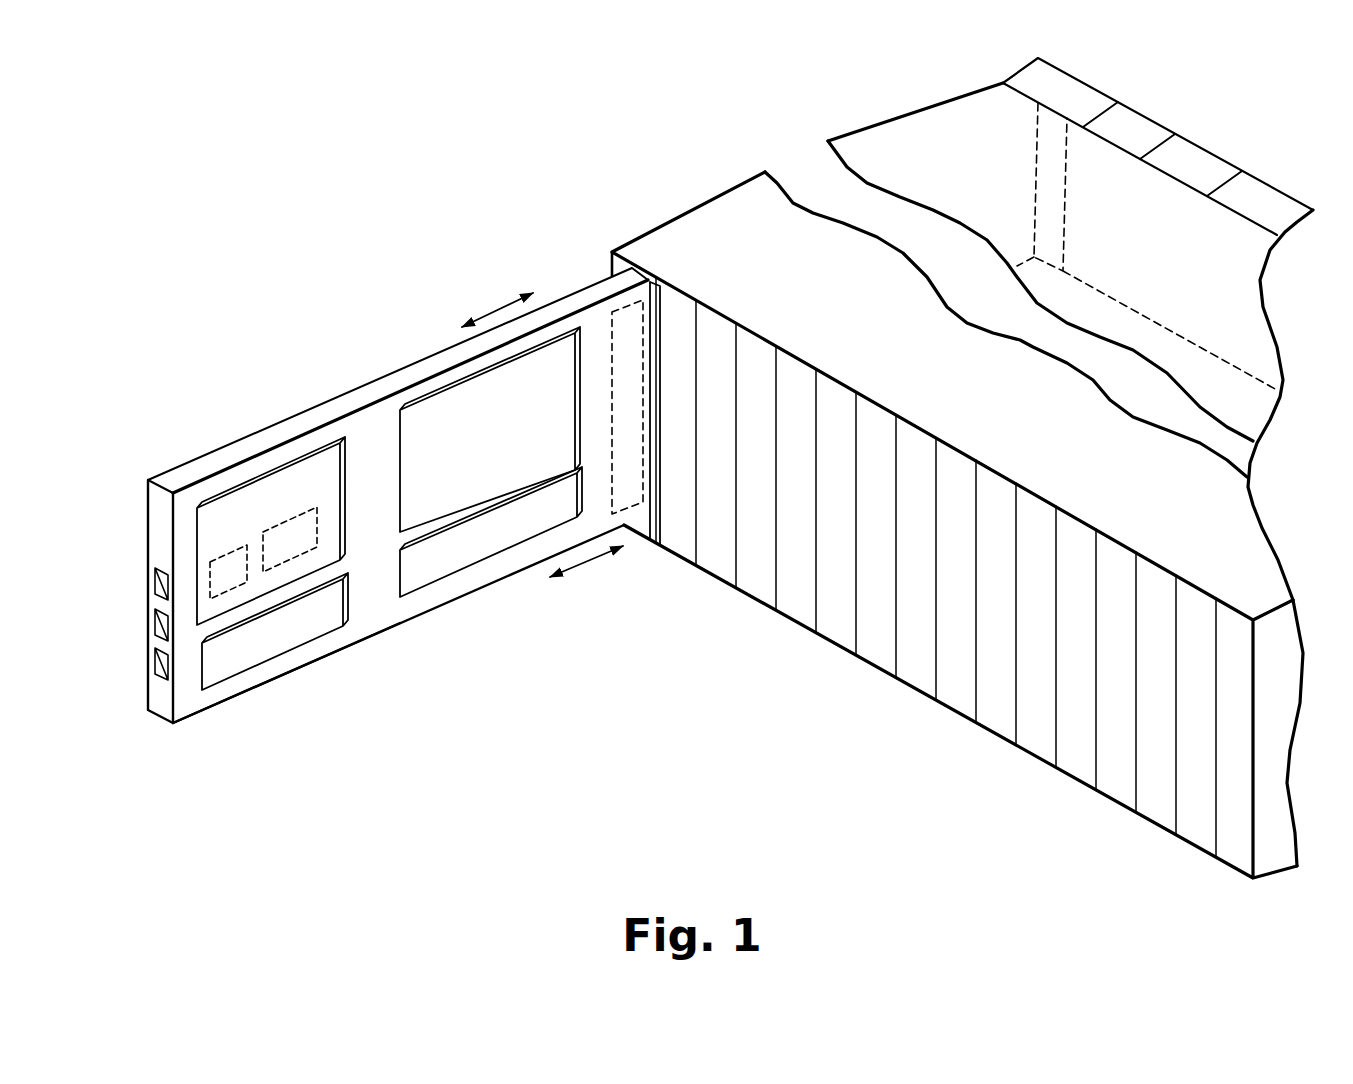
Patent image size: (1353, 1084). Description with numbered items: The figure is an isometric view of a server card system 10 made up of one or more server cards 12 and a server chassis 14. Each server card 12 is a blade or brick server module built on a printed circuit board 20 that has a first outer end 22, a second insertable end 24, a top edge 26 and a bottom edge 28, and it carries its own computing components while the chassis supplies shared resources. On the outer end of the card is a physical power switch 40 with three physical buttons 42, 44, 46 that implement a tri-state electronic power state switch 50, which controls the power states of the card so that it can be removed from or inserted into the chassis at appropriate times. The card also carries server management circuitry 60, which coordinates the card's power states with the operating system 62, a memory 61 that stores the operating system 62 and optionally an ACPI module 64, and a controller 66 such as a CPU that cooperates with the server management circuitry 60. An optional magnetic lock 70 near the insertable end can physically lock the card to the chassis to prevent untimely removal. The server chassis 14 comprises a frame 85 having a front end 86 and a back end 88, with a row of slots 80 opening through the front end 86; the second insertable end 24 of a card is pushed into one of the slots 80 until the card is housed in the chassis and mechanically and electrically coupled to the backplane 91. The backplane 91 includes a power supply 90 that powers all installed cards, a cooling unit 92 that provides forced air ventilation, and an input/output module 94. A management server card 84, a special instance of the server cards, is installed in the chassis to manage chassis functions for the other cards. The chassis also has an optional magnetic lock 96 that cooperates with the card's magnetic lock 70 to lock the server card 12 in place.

The system 10 is at (468, 186).
The server card 12 is at (250, 432).
The server chassis 14 is at (667, 221).
The printed circuit board 20 is at (455, 588).
The first outer end 22 is at (168, 714).
The second insertable end 24 is at (633, 523).
The top edge 26 is at (176, 467).
The bottom edge 28 is at (240, 693).
The physical power switch 40 is at (146, 590).
The physical button 42 is at (156, 578).
The physical button 44 is at (156, 623).
The physical button 46 is at (156, 663).
The electronic power state switch 50 is at (493, 557).
The server management circuitry 60 is at (452, 388).
The memory 61 is at (232, 489).
The operating system 62 is at (209, 568).
The Advanced Configuration and Power Interface (ACPI) module 64 is at (303, 513).
The controller 66 is at (293, 650).
The magnetic lock 70 is at (612, 330).
The slots 80 is at (610, 252).
The management server card 84 is at (1233, 873).
The frame 85 is at (1170, 496).
The front end 86 is at (693, 289).
The back end 88 is at (1270, 187).
The power supply 90 is at (1087, 82).
The backplane 91 is at (1121, 96).
The cooling unit 92 is at (1147, 117).
The input/output module 94 is at (1207, 150).
The magnetic lock 96 is at (1066, 218).